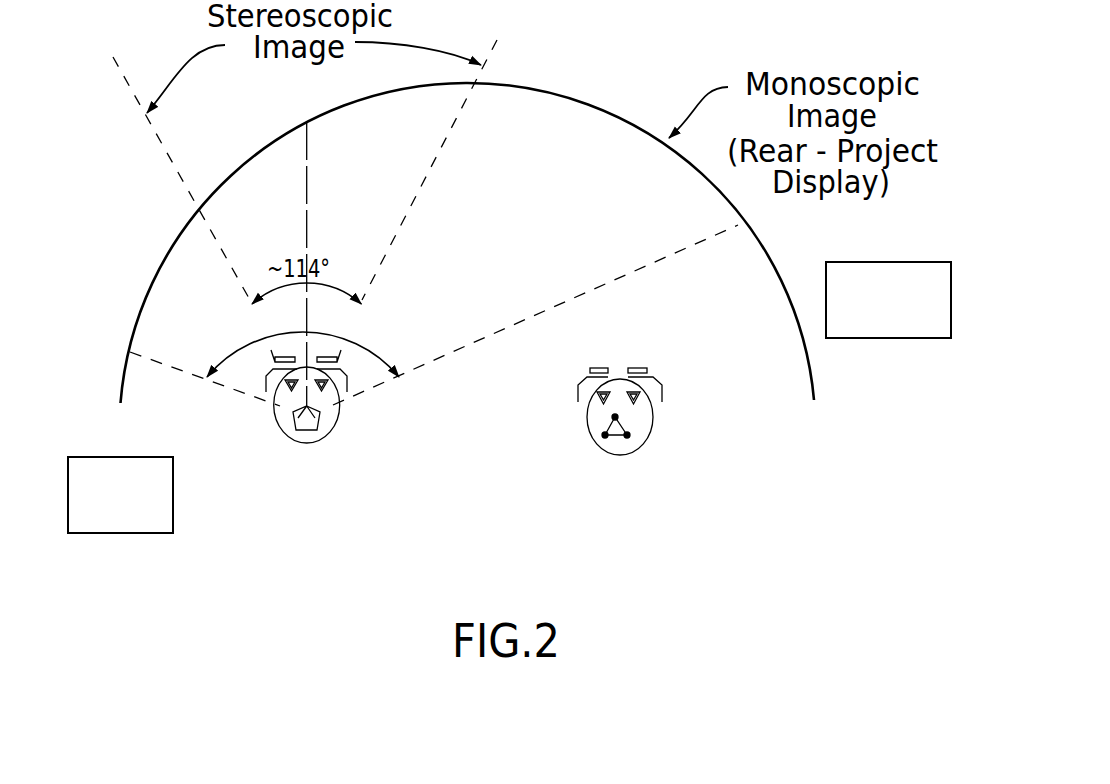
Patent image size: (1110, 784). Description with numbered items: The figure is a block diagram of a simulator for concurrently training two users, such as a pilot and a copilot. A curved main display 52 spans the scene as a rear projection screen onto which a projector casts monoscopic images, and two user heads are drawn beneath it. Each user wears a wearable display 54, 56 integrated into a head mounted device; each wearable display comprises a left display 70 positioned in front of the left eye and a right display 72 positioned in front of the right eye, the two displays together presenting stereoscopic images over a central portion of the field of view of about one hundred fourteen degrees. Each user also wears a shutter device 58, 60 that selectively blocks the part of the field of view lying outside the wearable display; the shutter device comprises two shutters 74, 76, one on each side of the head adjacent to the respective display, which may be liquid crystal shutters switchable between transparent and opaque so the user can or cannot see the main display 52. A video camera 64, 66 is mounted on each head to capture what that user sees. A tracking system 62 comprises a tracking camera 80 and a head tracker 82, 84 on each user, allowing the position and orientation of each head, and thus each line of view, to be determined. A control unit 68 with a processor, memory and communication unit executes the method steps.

The main display 52 is at (554, 89).
The wearable display 54 is at (336, 346).
The wearable display 56 is at (651, 363).
The wearable shutter device 58 is at (249, 392).
The wearable shutter device 60 is at (634, 373).
The tracking system 62 is at (900, 299).
The video camera 64 is at (331, 387).
The video camera 66 is at (596, 407).
The control unit 68 is at (98, 533).
The left display 70 is at (594, 367).
The right display 72 is at (637, 367).
The shutter 74 is at (206, 375).
The shutter 76 is at (397, 371).
The tracking camera 80 is at (900, 338).
The head tracker 82 is at (295, 419).
The head tracker 84 is at (632, 425).